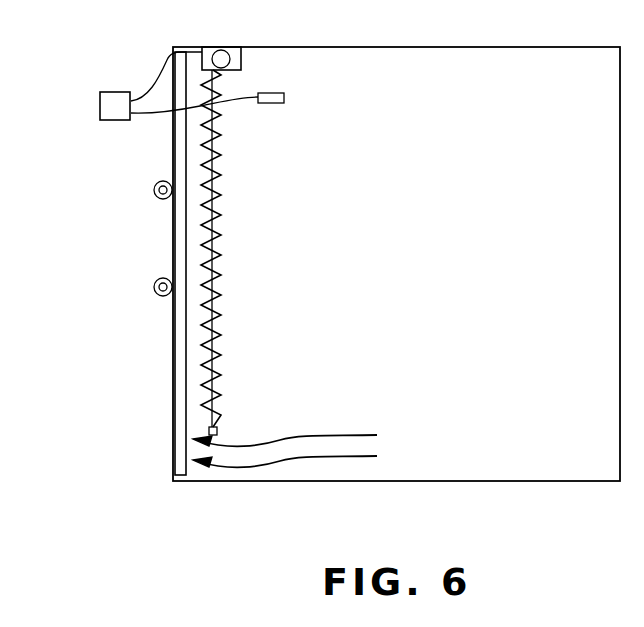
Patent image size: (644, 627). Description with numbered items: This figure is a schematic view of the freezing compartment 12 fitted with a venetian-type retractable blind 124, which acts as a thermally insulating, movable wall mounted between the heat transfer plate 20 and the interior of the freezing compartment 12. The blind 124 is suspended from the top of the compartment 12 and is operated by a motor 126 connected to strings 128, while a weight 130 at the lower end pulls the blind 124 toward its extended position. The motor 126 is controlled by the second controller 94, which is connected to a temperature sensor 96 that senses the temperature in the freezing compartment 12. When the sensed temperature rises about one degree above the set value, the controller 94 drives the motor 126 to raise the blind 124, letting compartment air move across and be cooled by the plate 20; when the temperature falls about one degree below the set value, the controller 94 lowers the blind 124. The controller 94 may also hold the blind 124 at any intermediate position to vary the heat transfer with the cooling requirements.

The freezing compartment 12 is at (505, 372).
The heat transfer plate 20 is at (173, 411).
The second controller 94 is at (112, 92).
The temperature sensor 96 is at (273, 93).
The retractable blind 124 is at (208, 359).
The motor 126 is at (227, 52).
The strings 128 is at (215, 303).
The weight 130 is at (218, 428).